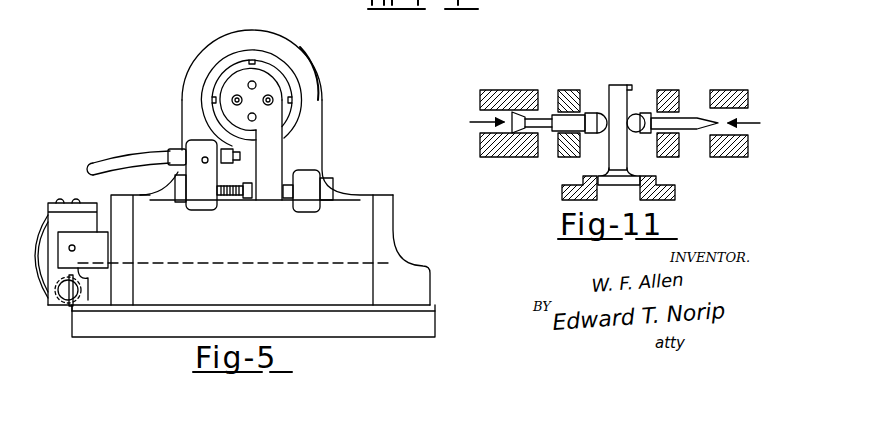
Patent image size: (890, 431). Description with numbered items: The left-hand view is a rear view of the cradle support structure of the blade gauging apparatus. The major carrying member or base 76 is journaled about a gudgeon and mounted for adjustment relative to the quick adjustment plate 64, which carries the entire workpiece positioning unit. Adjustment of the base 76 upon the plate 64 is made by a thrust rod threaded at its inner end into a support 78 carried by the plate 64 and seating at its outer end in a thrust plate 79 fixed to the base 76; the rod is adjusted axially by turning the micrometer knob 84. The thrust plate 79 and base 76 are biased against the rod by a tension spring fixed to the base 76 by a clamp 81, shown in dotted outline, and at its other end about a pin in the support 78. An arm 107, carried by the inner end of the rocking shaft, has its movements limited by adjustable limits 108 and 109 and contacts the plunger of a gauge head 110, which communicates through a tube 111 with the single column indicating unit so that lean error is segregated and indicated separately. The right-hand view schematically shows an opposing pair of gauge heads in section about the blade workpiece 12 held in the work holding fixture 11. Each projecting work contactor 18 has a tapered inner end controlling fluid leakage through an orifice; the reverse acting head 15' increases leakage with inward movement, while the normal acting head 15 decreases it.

In FIG. 5, the base 76 is at (229, 42).
In FIG. 5, the quick adjustment plate 64 is at (427, 325).
In FIG. 5, the arm 107 is at (272, 77).
In FIG. 5, the gauge head 110 is at (227, 157).
In FIG. 5, the tube 111 is at (111, 162).
In FIG. 5, the adjustable limit 108 is at (178, 203).
In FIG. 5, the adjustable limit 109 is at (338, 200).
In FIG. 5, the micrometer knob 84 is at (36, 232).
In FIG. 5, the thrust plate 79 is at (83, 266).
In FIG. 5, the support 78 is at (55, 293).
In FIG. 5, the clamp 81 is at (68, 311).
In FIG. 11, the reverse acting gauge head 15' is at (509, 103).
In FIG. 11, the gauge head 15 is at (726, 104).
In FIG. 11, the work contactor 18 is at (596, 113).
In FIG. 11, the workpiece 12 is at (613, 88).
In FIG. 11, the work holding fixture 11 is at (679, 193).